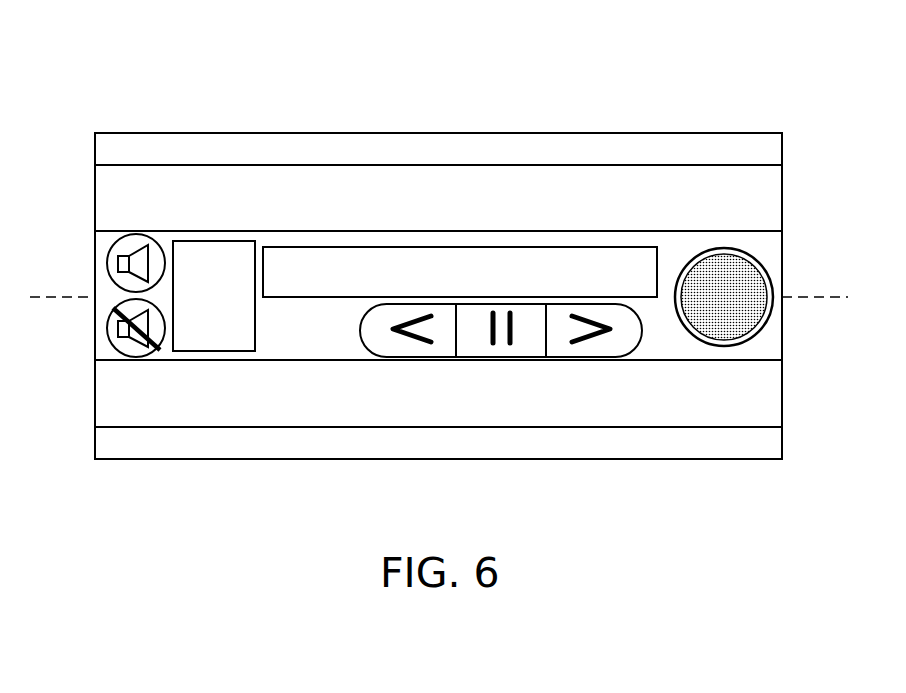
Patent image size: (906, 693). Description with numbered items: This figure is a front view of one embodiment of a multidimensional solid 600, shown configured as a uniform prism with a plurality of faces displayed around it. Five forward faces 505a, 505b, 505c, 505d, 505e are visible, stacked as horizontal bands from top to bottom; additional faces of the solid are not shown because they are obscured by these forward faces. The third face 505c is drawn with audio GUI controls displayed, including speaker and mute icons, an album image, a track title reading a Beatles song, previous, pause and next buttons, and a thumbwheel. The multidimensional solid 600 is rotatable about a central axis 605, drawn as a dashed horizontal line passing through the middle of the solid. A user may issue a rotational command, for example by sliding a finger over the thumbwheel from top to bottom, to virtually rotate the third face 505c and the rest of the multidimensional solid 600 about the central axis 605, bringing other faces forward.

The multidimensional solid 600 is at (108, 47).
The first face 505a is at (181, 142).
The second face 505b is at (108, 207).
The third face 505c is at (773, 345).
The fourth face 505d is at (113, 398).
The fifth face 505e is at (145, 442).
The central axis 605 is at (82, 295).